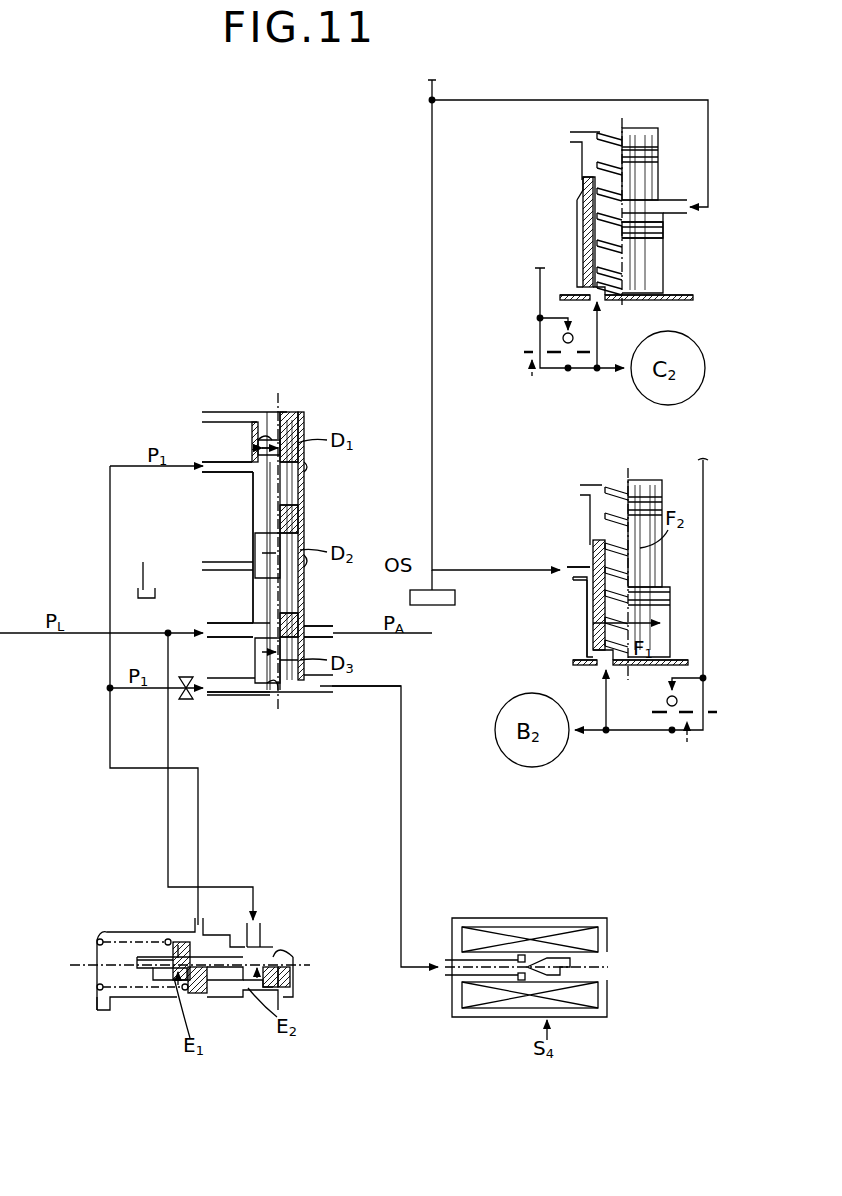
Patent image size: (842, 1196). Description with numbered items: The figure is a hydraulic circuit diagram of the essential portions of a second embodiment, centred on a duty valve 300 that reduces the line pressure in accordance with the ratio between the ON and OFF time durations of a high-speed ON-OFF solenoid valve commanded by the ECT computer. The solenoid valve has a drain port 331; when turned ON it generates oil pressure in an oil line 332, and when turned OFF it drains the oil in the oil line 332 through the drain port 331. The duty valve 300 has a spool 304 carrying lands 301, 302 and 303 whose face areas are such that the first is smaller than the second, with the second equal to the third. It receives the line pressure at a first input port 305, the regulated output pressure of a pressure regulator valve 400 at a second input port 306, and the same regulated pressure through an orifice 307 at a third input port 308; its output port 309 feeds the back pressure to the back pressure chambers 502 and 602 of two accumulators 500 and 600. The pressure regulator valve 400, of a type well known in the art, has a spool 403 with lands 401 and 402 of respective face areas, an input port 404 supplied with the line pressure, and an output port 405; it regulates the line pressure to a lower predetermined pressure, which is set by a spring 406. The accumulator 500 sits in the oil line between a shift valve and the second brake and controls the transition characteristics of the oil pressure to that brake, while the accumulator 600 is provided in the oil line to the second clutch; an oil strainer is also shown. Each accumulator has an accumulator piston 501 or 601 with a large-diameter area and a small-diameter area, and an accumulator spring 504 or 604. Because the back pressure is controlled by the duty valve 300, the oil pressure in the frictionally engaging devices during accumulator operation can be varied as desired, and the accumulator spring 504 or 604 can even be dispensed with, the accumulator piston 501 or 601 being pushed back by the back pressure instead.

The duty valve 300 is at (228, 372).
The land 301 is at (304, 416).
The land 302 is at (300, 517).
The land 303 is at (298, 625).
The spool 304 is at (255, 512).
The first input port 305 is at (228, 634).
The second input port 306 is at (213, 470).
The orifice 307 is at (187, 695).
The third input port 308 is at (230, 693).
The output port 309 is at (327, 637).
The drain port 331 is at (604, 960).
The oil line 332 is at (403, 826).
The pressure regulator valve 400 is at (158, 1028).
The land 401 is at (290, 988).
The land 402 is at (203, 988).
The spool 403 is at (237, 982).
The input port 404 is at (260, 933).
The output port 405 is at (193, 932).
The spring 406 is at (97, 995).
The accumulator 500 is at (585, 625).
The accumulator piston 501 is at (672, 610).
The back pressure chamber 502 is at (573, 580).
The accumulator spring 504 is at (617, 480).
The accumulator 600 is at (663, 268).
The accumulator piston 601 is at (652, 238).
The back pressure chamber 602 is at (665, 222).
The accumulator spring 604 is at (620, 135).